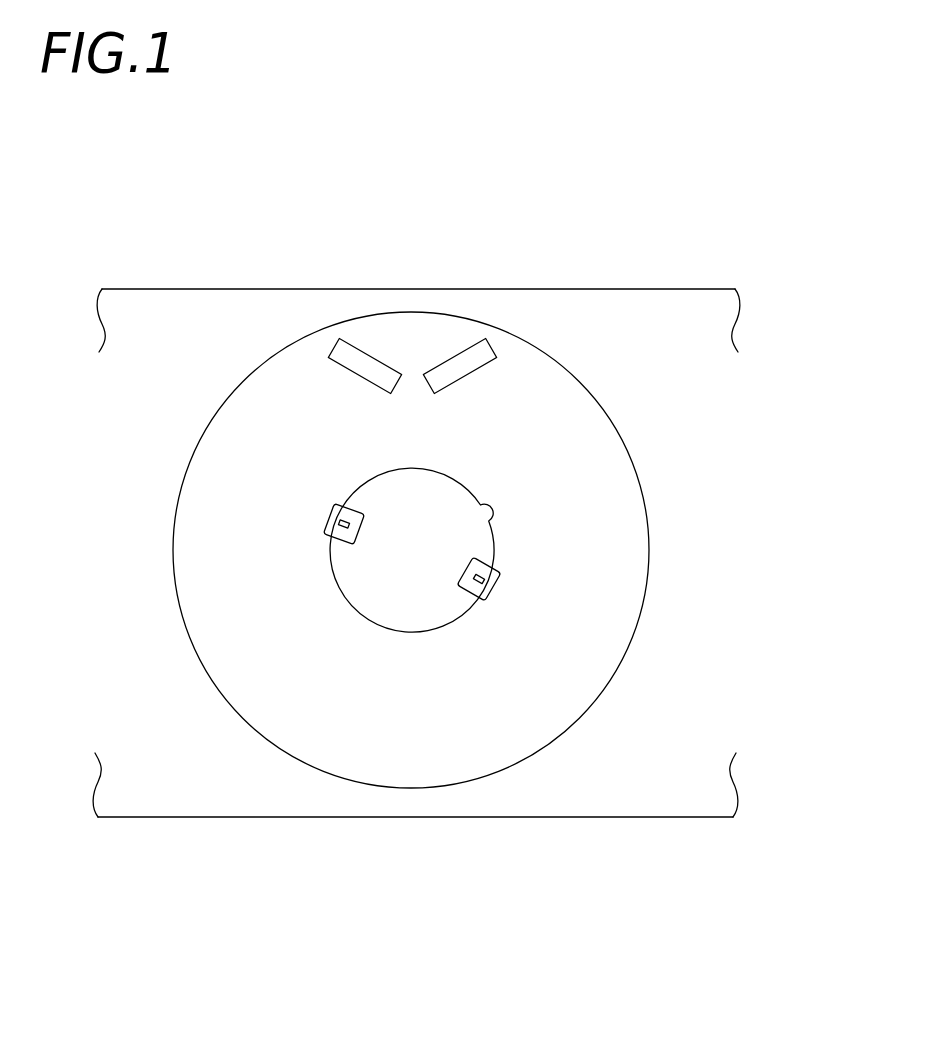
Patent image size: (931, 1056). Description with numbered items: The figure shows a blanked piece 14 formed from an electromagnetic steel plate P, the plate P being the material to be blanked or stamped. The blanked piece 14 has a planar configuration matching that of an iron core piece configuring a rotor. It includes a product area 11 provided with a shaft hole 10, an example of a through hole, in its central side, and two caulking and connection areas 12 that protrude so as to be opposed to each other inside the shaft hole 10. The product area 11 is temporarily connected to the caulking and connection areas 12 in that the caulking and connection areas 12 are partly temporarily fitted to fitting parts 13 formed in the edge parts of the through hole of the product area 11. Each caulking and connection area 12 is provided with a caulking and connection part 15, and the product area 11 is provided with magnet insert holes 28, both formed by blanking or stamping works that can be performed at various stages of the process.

The electromagnetic steel plate P is at (152, 289).
The shaft hole 10 is at (480, 510).
The product area 11 is at (570, 370).
The caulking and connection area 12 is at (356, 542).
The fitting part 13 is at (325, 514).
The blanked piece 14 is at (408, 308).
The caulking and connection part 15 is at (341, 510).
The magnet insert hole 28 is at (362, 363).